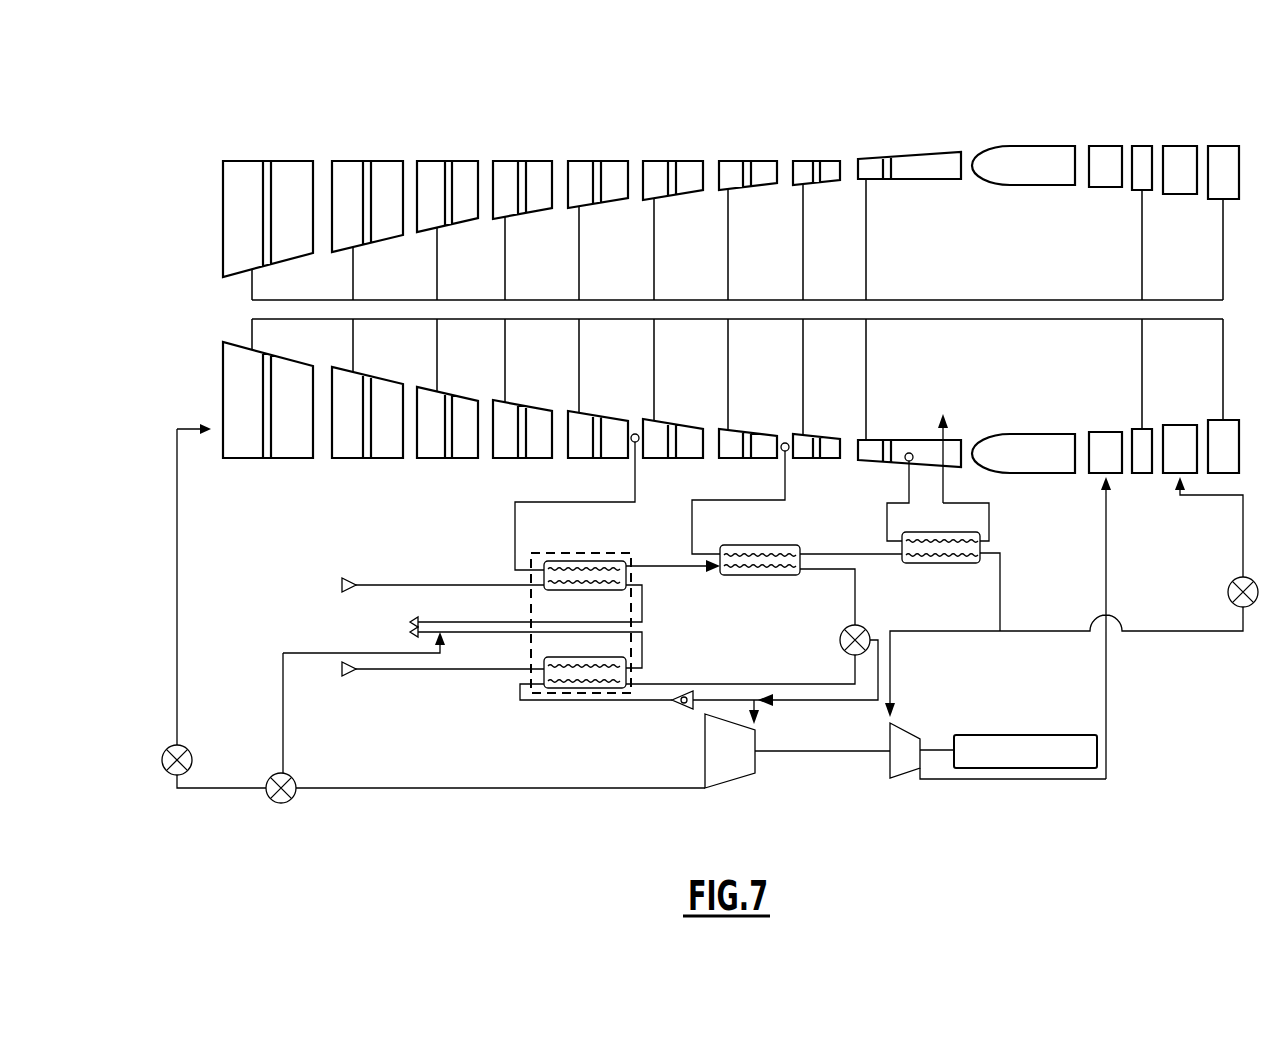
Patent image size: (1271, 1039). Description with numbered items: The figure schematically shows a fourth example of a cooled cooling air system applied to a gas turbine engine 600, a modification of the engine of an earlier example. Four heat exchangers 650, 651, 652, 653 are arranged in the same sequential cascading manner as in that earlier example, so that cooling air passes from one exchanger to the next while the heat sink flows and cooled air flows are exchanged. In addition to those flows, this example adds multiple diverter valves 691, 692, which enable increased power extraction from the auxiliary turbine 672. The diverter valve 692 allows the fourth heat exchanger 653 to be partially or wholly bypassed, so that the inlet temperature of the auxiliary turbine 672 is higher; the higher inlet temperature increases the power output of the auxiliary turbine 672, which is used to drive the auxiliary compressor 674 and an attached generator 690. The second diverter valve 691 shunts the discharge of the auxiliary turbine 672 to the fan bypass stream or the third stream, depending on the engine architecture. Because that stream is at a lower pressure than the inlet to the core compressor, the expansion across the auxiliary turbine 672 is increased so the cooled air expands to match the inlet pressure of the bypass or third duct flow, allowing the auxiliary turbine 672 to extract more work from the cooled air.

The gas turbine engine 600 is at (186, 66).
The heat exchanger 650 is at (588, 552).
The heat exchanger 651 is at (738, 545).
The heat exchanger 652 is at (928, 565).
The fourth heat exchanger 653 is at (571, 690).
The auxiliary turbine 672 is at (731, 760).
The auxiliary compressor 674 is at (903, 752).
The generator 690 is at (1035, 735).
The second diverter valve 691 is at (283, 803).
The diverter valve 692 is at (841, 628).